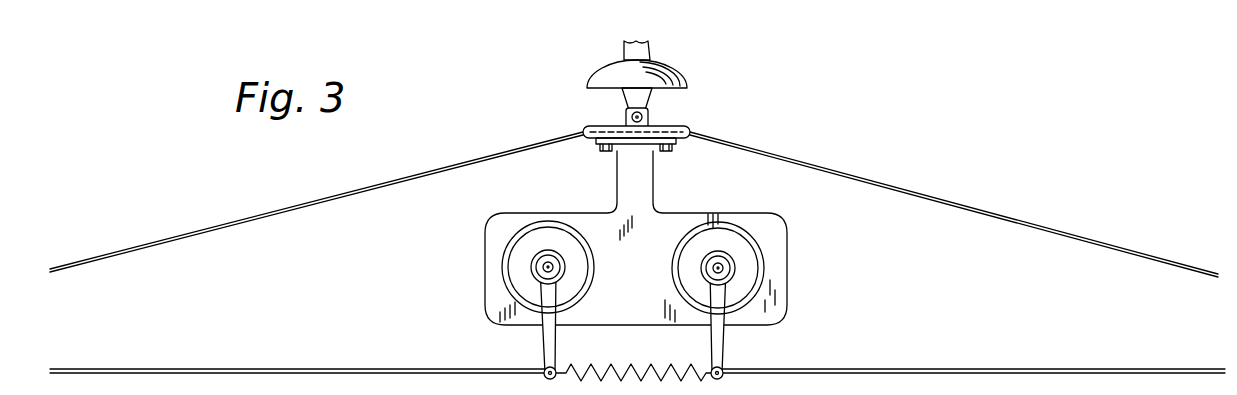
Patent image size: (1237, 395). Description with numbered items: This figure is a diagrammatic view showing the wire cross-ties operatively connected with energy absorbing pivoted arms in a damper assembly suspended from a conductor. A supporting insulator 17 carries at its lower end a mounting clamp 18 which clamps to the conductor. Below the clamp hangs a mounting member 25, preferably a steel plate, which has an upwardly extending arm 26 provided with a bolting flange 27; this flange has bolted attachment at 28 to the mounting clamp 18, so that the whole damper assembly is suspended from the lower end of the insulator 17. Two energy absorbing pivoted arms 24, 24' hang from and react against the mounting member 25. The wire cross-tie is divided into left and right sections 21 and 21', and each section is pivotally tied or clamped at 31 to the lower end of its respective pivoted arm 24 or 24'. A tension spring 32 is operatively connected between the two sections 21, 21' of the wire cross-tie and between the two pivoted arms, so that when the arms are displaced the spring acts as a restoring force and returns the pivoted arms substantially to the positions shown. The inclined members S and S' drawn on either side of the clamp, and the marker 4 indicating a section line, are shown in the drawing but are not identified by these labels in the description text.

The supporting insulator 17 is at (603, 77).
The mounting clamp 18 is at (600, 125).
The section line 4 is at (558, 185).
The bolted attachment 28 is at (600, 152).
The bolting flange 27 is at (635, 146).
The upwardly extending arm 26 is at (653, 190).
The mounting member 25 is at (490, 228).
The energy absorbing pivoted arm 24 is at (513, 320).
The energy absorbing pivoted arm 24' is at (745, 321).
The pivotal tie 31 is at (544, 370).
The tension spring 32 is at (640, 358).
The wire cross-tie 21 is at (300, 350).
The wire cross-tie section 21' is at (971, 357).
The side arm S is at (316, 202).
The side arm S' is at (954, 204).